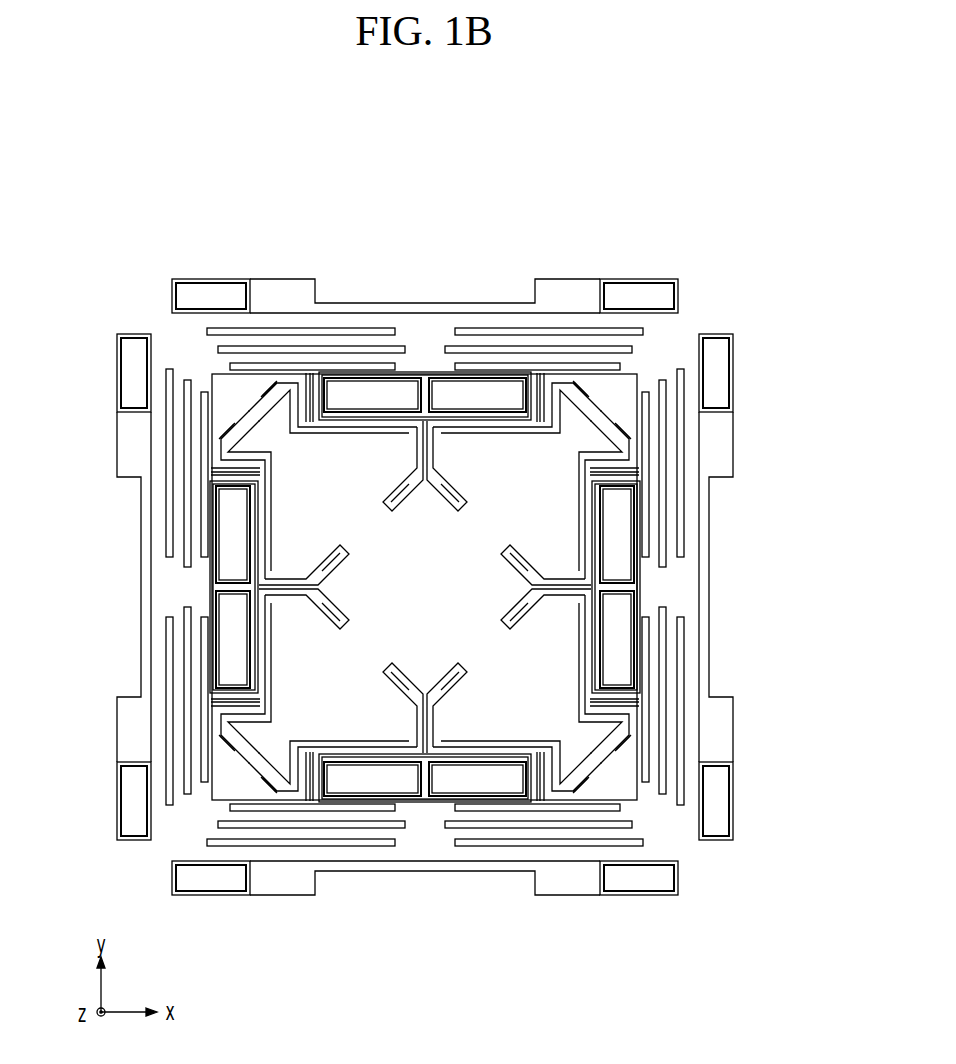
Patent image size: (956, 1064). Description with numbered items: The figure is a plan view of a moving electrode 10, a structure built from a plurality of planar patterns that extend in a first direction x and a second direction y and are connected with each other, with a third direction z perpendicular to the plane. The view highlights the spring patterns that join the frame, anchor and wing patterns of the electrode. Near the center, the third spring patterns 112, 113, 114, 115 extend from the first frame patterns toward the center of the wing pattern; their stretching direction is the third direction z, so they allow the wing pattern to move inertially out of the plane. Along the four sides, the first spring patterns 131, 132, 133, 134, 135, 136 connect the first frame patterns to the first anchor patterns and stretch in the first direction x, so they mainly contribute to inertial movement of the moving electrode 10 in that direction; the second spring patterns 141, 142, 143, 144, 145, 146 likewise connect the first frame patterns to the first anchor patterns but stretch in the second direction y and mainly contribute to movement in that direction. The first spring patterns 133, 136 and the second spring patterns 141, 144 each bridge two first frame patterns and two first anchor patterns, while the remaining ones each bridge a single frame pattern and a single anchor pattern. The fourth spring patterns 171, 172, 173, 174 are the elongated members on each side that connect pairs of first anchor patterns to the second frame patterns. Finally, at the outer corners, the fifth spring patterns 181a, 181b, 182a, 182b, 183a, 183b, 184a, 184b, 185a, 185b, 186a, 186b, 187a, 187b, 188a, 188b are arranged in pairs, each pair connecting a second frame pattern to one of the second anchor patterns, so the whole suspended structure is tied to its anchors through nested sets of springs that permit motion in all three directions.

The moving electrode 10 is at (413, 225).
The third spring pattern 112 is at (418, 456).
The third spring pattern 113 is at (432, 456).
The third spring pattern 114 is at (432, 718).
The third spring pattern 115 is at (418, 718).
The first spring pattern 131 is at (309, 395).
The first spring pattern 132 is at (541, 395).
The first spring pattern 133 is at (600, 640).
The first spring pattern 134 is at (541, 779).
The first spring pattern 135 is at (309, 779).
The first spring pattern 136 is at (250, 640).
The second spring pattern 141 is at (475, 411).
The second spring pattern 142 is at (610, 472).
The second spring pattern 143 is at (618, 707).
The second spring pattern 144 is at (475, 763).
The second spring pattern 145 is at (232, 707).
The second spring pattern 146 is at (240, 472).
The fourth spring pattern 171 is at (369, 372).
The fourth spring pattern 172 is at (637, 535).
The fourth spring pattern 173 is at (369, 802).
The fourth spring pattern 174 is at (213, 535).
The fifth spring pattern 181a is at (200, 305).
The fifth spring pattern 181b is at (226, 286).
The fifth spring pattern 182a is at (651, 305).
The fifth spring pattern 182b is at (622, 286).
The fifth spring pattern 183a is at (706, 362).
The fifth spring pattern 183b is at (730, 389).
The fifth spring pattern 184a is at (710, 822).
The fifth spring pattern 184b is at (700, 790).
The fifth spring pattern 185a is at (651, 869).
The fifth spring pattern 185b is at (622, 888).
The fifth spring pattern 186a is at (200, 869).
The fifth spring pattern 186b is at (226, 888).
The fifth spring pattern 187a is at (140, 822).
The fifth spring pattern 187b is at (150, 790).
The fifth spring pattern 188a is at (145, 362).
The fifth spring pattern 188b is at (120, 389).